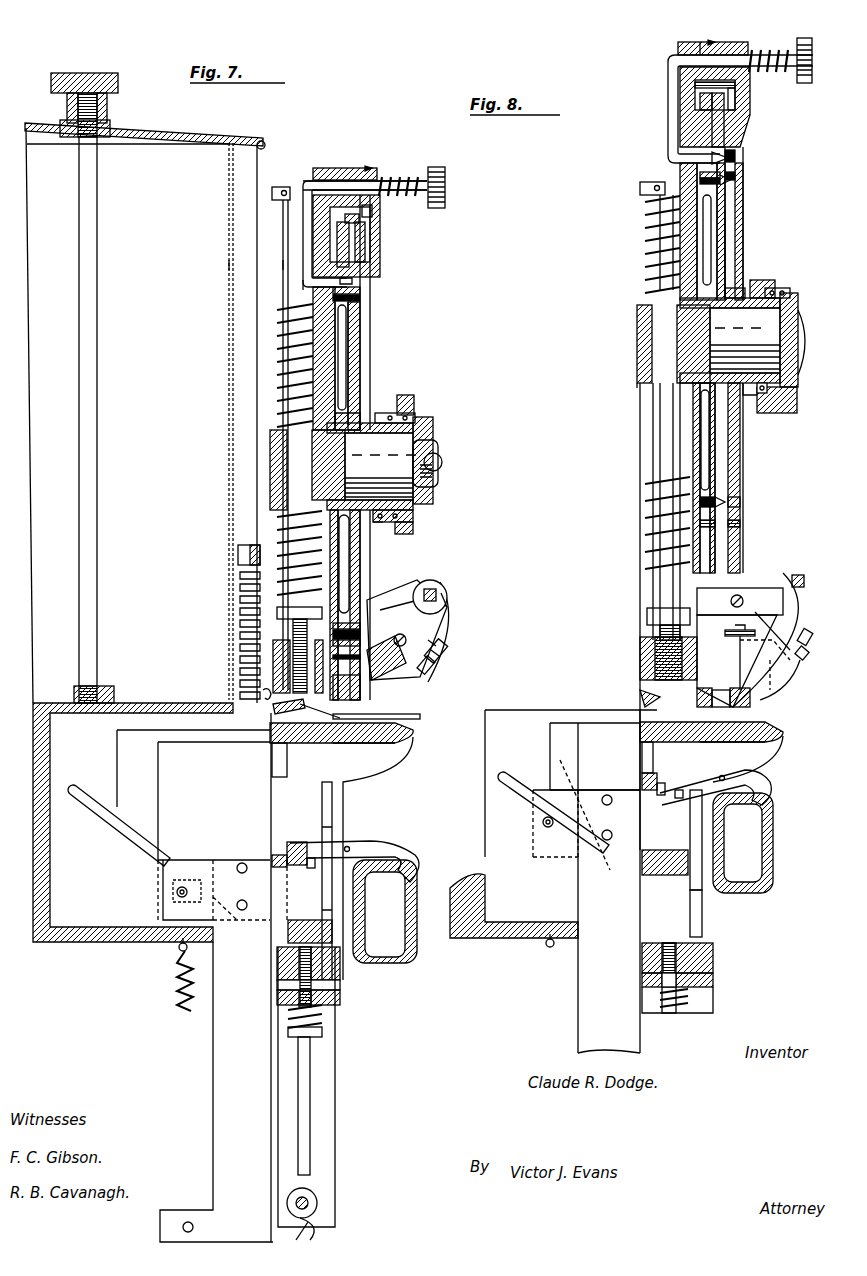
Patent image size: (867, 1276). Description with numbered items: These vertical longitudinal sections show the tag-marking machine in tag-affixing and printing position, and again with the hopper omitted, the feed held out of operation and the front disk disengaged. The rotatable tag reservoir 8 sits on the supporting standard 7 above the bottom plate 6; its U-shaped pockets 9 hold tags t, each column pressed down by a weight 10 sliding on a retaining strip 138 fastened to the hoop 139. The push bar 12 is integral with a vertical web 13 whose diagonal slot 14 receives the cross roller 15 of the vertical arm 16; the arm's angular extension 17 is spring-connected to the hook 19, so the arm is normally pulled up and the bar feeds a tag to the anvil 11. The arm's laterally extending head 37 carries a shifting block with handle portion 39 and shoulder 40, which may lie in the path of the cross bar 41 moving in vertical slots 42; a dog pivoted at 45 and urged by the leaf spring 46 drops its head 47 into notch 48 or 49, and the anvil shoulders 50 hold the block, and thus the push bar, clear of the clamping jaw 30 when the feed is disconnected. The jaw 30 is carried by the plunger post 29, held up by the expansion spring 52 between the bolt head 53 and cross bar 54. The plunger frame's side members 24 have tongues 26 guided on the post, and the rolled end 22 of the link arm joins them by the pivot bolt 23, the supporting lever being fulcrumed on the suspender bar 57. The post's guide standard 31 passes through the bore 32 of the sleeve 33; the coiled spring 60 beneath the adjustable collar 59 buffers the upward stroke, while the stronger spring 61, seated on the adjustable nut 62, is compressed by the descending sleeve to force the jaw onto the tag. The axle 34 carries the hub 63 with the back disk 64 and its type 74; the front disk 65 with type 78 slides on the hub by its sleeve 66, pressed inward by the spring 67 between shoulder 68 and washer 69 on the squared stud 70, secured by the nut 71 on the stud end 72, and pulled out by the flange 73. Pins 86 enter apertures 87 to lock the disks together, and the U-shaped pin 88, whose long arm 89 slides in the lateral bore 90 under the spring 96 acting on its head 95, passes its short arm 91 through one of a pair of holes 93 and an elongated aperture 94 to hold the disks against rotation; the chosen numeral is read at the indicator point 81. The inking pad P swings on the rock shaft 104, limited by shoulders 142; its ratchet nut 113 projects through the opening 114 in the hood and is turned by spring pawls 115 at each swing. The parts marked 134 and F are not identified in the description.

In FIG. 7, the bottom plate 6 is at (108, 940).
In FIG. 7, the supporting standard 7 is at (98, 500).
In FIG. 7, the tag-containing reservoir 8 is at (145, 413).
In FIG. 7, the U-shaped pockets 9 is at (264, 445).
In FIG. 7, the weight 10 is at (240, 553).
In FIG. 7, the anvil 11 is at (352, 768).
In FIG. 8, the anvil 11 is at (725, 948).
In FIG. 7, the push bar 12 is at (214, 977).
In FIG. 8, the push bar 12 is at (595, 756).
In FIG. 7, the vertical web 13 is at (165, 795).
In FIG. 8, the vertical web 13 is at (571, 881).
In FIG. 7, the diagonal elongated slot 14 is at (118, 843).
In FIG. 8, the diagonal elongated slot 14 is at (520, 800).
In FIG. 7, the cross roller 15 is at (184, 885).
In FIG. 7, the vertical arm 16 is at (212, 1020).
In FIG. 8, the vertical arm 16 is at (590, 993).
In FIG. 7, the angular extension 17 is at (193, 1227).
In FIG. 7, the hook 19 is at (182, 951).
In FIG. 8, the hook 19 is at (548, 947).
In FIG. 7, the rolled end 22 is at (315, 1235).
In FIG. 7, the pivot bolt 23 is at (312, 1205).
In FIG. 7, the side members 24 is at (328, 1120).
In FIG. 7, the tongues 26 is at (305, 1082).
In FIG. 8, the plunger post 29 is at (640, 658).
In FIG. 8, the clamping jaw 30 is at (743, 700).
In FIG. 7, the guide standard 31 is at (283, 265).
In FIG. 8, the guide standard 31 is at (660, 423).
In FIG. 8, the vertical bore 32 is at (637, 357).
In FIG. 8, the sleeve 33 is at (637, 323).
In FIG. 7, the axle 34 is at (364, 466).
In FIG. 8, the axle 34 is at (728, 340).
In FIG. 7, the head 37 is at (272, 860).
In FIG. 8, the head 37 is at (642, 790).
In FIG. 7, the handle portion 39 is at (417, 900).
In FIG. 8, the handle portion 39 is at (773, 857).
In FIG. 7, the shoulder 40 is at (325, 932).
In FIG. 8, the shoulder 40 is at (672, 877).
In FIG. 7, the cross bar 41 is at (328, 920).
In FIG. 8, the cross bar 41 is at (703, 830).
In FIG. 7, the vertical slots 42 is at (333, 800).
In FIG. 8, the vertical slots 42 is at (702, 915).
In FIG. 7, the pivot 45 is at (348, 847).
In FIG. 8, the pivot 45 is at (745, 770).
In FIG. 7, the leaf spring 46 is at (405, 855).
In FIG. 7, the dog head 47 is at (300, 845).
In FIG. 8, the dog head 47 is at (662, 783).
In FIG. 7, the notch 48 is at (310, 862).
In FIG. 8, the notch 48 is at (676, 800).
In FIG. 7, the notch 49 is at (288, 862).
In FIG. 8, the notch 49 is at (650, 797).
In FIG. 7, the shoulders 50 is at (270, 760).
In FIG. 8, the shoulders 50 is at (642, 750).
In FIG. 7, the expansion spring 52 is at (325, 1012).
In FIG. 8, the expansion spring 52 is at (683, 1012).
In FIG. 7, the bolt head 53 is at (322, 1032).
In FIG. 8, the cross bar 54 is at (713, 978).
In FIG. 8, the suspender bar 57 is at (713, 990).
In FIG. 7, the adjustable collar 59 is at (280, 187).
In FIG. 8, the adjustable collar 59 is at (640, 188).
In FIG. 7, the coiled spring 60 is at (296, 498).
In FIG. 8, the coiled spring 60 is at (650, 225).
In FIG. 8, the coil spring 61 is at (648, 535).
In FIG. 8, the adjustable nut 62 is at (647, 613).
In FIG. 7, the hub 63 is at (372, 420).
In FIG. 8, the hub 63 is at (742, 288).
In FIG. 7, the back disk 64 is at (343, 350).
In FIG. 8, the back disk 64 is at (680, 165).
In FIG. 7, the front disk 65 is at (366, 325).
In FIG. 8, the front disk 65 is at (745, 208).
In FIG. 7, the sleeve 66 is at (380, 523).
In FIG. 8, the sleeve 66 is at (765, 280).
In FIG. 7, the coil compression spring 67 is at (413, 515).
In FIG. 8, the coil compression spring 67 is at (770, 395).
In FIG. 7, the shoulder 68 is at (413, 528).
In FIG. 8, the shoulder 68 is at (763, 398).
In FIG. 7, the washer 69 is at (410, 413).
In FIG. 8, the washer 69 is at (790, 290).
In FIG. 7, the squared stud 70 is at (438, 458).
In FIG. 7, the nut 71 is at (433, 430).
In FIG. 8, the nut 71 is at (798, 296).
In FIG. 7, the stud end 72 is at (435, 440).
In FIG. 8, the stud end 72 is at (798, 315).
In FIG. 7, the flange 73 is at (405, 395).
In FIG. 8, the flange 73 is at (797, 410).
In FIG. 8, the type 74 is at (702, 98).
In FIG. 7, the type 78 is at (372, 240).
In FIG. 8, the type 78 is at (736, 112).
In FIG. 7, the indicator point 81 is at (380, 232).
In FIG. 8, the indicator point 81 is at (750, 100).
In FIG. 7, the pins 86 is at (360, 290).
In FIG. 8, the pins 86 is at (745, 182).
In FIG. 7, the transverse apertures 87 is at (362, 640).
In FIG. 8, the transverse apertures 87 is at (736, 175).
In FIG. 7, the U-shaped pin 88 is at (363, 212).
In FIG. 8, the U-shaped pin 88 is at (721, 96).
In FIG. 7, the long arm 89 is at (425, 192).
In FIG. 8, the lateral bore 90 is at (700, 42).
In FIG. 7, the short arm 91 is at (352, 280).
In FIG. 8, the short arm 91 is at (730, 155).
In FIG. 7, the circular holes 93 is at (362, 296).
In FIG. 8, the circular holes 93 is at (722, 522).
In FIG. 8, the elongated aperture 94 is at (735, 157).
In FIG. 8, the head 95 is at (805, 38).
In FIG. 7, the spring 96 is at (395, 178).
In FIG. 8, the spring 96 is at (765, 50).
In FIG. 7, the rock shaft 104 is at (447, 597).
In FIG. 8, the rock shaft 104 is at (770, 617).
In FIG. 7, the ratchet nut 113 is at (440, 675).
In FIG. 8, the opening 114 is at (787, 670).
In FIG. 7, the spring pawls 115 is at (447, 660).
In FIG. 8, the spring pawls 115 is at (800, 655).
In FIG. 7, the plate 134 is at (378, 222).
In FIG. 8, the plate 134 is at (745, 90).
In FIG. 7, the retaining strips 138 is at (229, 263).
In FIG. 7, the hoop 139 is at (263, 694).
In FIG. 7, the shoulders 142 is at (438, 590).
In FIG. 8, the shoulders 142 is at (799, 575).
In FIG. 7, the inking pad P is at (450, 617).
In FIG. 8, the inking pad P is at (757, 590).
In FIG. 7, the strip F is at (420, 716).
In FIG. 7, the tags t is at (236, 610).